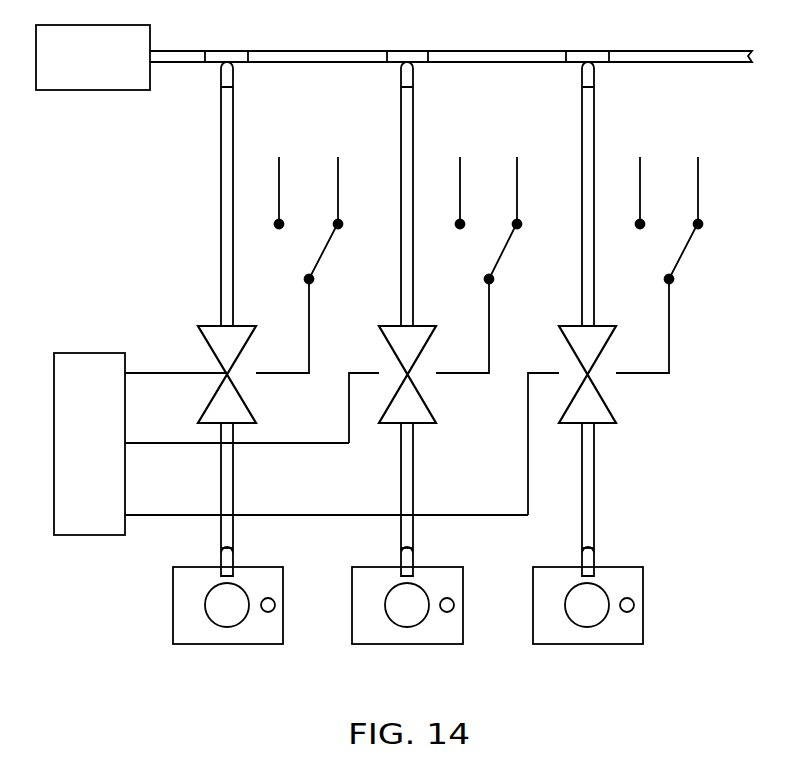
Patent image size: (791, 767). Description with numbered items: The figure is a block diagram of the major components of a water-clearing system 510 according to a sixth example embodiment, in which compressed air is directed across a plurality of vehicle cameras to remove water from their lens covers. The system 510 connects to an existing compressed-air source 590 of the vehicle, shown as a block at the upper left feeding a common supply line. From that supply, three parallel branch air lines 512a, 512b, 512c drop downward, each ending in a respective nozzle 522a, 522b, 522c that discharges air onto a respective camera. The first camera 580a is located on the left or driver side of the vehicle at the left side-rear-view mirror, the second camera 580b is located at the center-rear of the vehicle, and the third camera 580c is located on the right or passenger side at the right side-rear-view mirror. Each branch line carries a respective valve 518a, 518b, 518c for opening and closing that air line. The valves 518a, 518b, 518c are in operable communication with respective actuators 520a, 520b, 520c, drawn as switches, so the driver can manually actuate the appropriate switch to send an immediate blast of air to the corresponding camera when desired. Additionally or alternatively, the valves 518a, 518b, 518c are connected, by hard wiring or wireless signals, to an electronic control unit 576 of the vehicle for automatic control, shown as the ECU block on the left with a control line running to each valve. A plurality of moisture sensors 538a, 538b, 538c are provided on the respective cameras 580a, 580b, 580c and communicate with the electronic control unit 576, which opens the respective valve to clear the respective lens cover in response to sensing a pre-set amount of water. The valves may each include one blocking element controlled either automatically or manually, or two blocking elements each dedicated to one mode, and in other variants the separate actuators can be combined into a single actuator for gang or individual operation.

The water-clearing system 510 is at (664, 470).
The compressed-air source 590 is at (93, 93).
The electronic control unit 576 is at (68, 538).
The branch air line 512a is at (220, 178).
The branch air line 512b is at (400, 165).
The branch air line 512c is at (580, 165).
The valve 518a is at (206, 322).
The valve 518b is at (386, 322).
The valve 518c is at (566, 322).
The actuator 520a is at (276, 168).
The actuator 520b is at (457, 170).
The actuator 520c is at (637, 170).
The nozzle 522a is at (210, 570).
The nozzle 522b is at (390, 570).
The nozzle 522c is at (570, 570).
The first camera 580a is at (172, 625).
The second camera 580b is at (352, 625).
The third camera 580c is at (533, 625).
The moisture sensor 538a is at (266, 618).
The moisture sensor 538b is at (446, 618).
The moisture sensor 538c is at (626, 618).